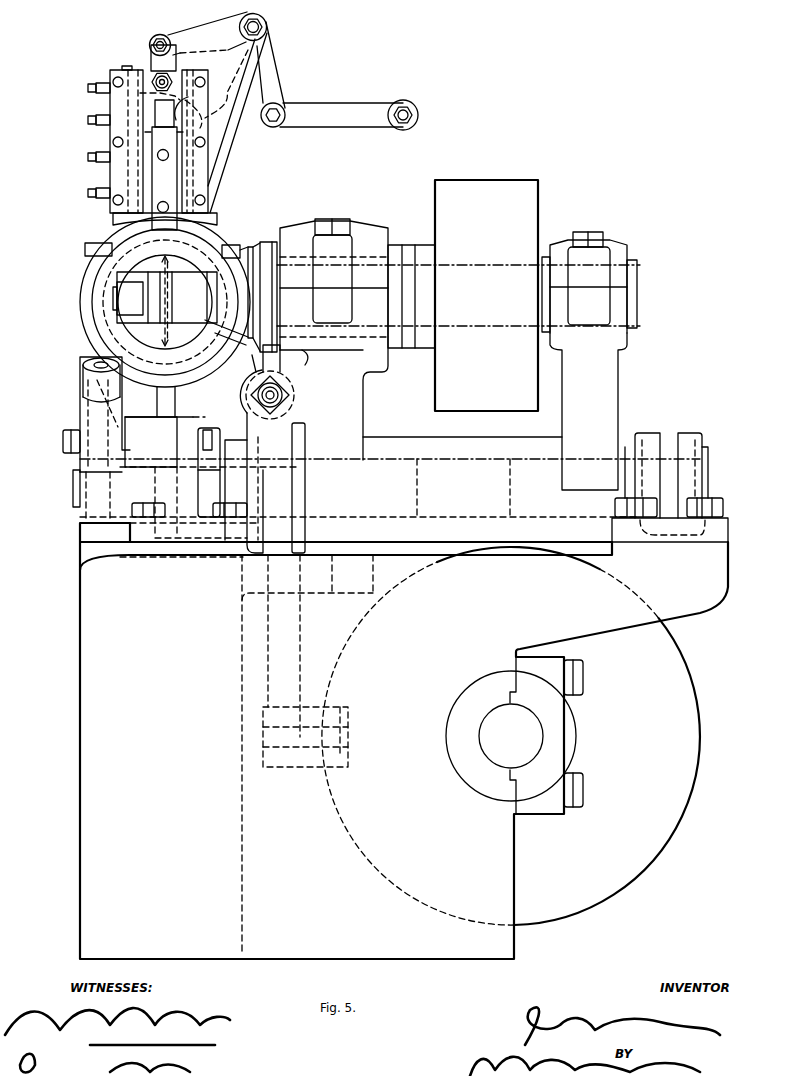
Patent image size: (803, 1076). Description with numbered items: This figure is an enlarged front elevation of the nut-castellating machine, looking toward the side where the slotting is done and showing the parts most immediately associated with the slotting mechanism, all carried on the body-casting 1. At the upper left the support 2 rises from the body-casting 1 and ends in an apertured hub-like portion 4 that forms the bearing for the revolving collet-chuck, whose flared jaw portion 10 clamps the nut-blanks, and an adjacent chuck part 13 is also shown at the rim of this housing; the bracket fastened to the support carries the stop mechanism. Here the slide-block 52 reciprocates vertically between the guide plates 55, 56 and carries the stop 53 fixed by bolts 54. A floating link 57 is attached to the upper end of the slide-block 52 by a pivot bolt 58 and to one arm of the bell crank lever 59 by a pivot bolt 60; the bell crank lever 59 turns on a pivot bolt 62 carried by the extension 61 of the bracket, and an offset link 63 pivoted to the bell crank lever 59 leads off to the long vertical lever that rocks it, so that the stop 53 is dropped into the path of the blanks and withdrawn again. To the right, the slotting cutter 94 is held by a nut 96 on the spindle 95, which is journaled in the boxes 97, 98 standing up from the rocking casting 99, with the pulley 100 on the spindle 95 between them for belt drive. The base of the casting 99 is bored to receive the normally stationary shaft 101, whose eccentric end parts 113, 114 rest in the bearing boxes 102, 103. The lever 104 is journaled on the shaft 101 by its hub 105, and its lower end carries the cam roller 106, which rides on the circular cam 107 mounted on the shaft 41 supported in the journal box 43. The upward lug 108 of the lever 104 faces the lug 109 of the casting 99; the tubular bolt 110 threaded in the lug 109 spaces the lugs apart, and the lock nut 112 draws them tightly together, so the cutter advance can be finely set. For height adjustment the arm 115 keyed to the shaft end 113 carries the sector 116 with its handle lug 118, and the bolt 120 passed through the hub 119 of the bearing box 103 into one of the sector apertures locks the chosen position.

The body-casting 1 is at (404, 741).
The support 2 is at (165, 315).
The hub-like portion 4 is at (85, 258).
The contracting or jaw portion 10 is at (97, 327).
The housing rim 13 is at (82, 298).
The shaft 41 is at (511, 736).
The journal box 43 is at (511, 736).
The slide-block 52 is at (165, 165).
The stop 53 is at (163, 166).
The bolts 54 is at (163, 198).
The guide plate 55 is at (200, 118).
The guide plate 56 is at (110, 100).
The floating link 57 is at (155, 62).
The pivot bolt 58 is at (163, 110).
The bell crank lever 59 is at (207, 33).
The pivot bolt 60 is at (160, 34).
The extension 61 is at (221, 123).
The pivot bolt 62 is at (268, 23).
The offset link 63 is at (337, 108).
The slotting cutter 94 is at (160, 335).
The spindle 95 is at (167, 302).
The nut 96 is at (117, 300).
The box 97 is at (382, 228).
The box 98 is at (589, 361).
The rocking frame or casting 99 is at (390, 477).
The pulley 100 is at (486, 295).
The shaft 101 is at (715, 466).
The bearing box 102 is at (663, 440).
The bearing box 103 is at (235, 490).
The lever 104 is at (302, 638).
The hub 105 is at (232, 443).
The cam roller 106 is at (342, 755).
The circular cam 107 is at (511, 736).
The lug 108 is at (296, 385).
The lug 109 is at (282, 412).
The tubular bolt 110 is at (280, 404).
The lock nut 112 is at (286, 393).
The eccentric supporting part 113 is at (213, 485).
The eccentric supporting part 114 is at (669, 494).
The arm 115 is at (108, 493).
The sector 116 is at (82, 403).
The lug 118 is at (90, 380).
The hub 119 is at (210, 487).
The bolt 120 is at (65, 443).